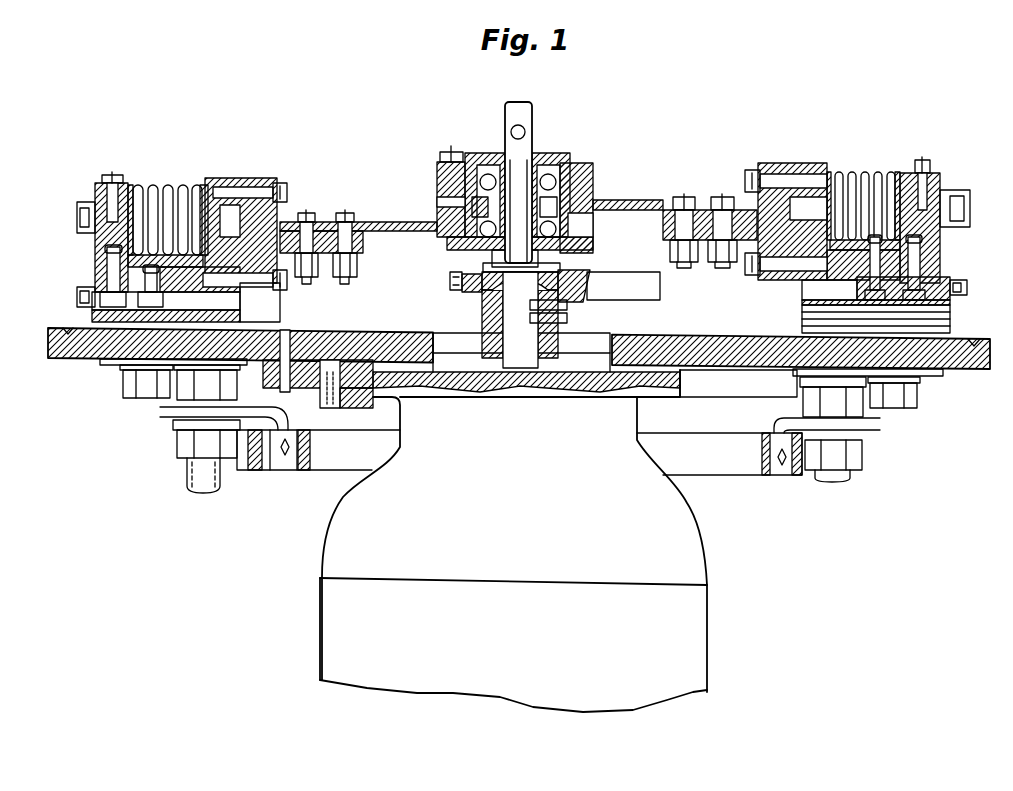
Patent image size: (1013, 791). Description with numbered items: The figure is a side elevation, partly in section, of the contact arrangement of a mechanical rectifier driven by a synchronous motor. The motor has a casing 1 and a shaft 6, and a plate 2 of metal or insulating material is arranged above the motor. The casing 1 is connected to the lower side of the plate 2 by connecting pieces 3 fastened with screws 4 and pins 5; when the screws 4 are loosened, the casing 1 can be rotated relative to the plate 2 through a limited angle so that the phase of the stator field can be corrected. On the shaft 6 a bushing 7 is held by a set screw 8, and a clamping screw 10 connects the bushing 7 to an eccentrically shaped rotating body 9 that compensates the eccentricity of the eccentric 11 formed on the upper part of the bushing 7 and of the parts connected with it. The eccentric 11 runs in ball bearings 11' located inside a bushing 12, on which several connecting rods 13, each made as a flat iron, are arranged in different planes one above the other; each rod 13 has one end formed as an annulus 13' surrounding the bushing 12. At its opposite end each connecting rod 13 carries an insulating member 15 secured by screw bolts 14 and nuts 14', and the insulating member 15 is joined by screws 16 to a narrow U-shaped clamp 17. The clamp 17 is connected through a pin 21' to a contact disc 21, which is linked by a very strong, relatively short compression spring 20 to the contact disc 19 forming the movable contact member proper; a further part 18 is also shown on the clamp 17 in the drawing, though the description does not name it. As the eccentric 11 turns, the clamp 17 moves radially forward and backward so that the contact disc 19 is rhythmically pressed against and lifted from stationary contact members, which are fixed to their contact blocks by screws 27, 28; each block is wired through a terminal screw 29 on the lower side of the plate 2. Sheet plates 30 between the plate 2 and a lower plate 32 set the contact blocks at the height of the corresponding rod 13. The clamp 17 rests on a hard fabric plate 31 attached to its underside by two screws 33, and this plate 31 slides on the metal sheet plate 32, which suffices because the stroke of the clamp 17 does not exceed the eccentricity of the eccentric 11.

The casing 1 is at (697, 529).
The plate 2 is at (950, 365).
The connecting pieces 3 is at (297, 391).
The screws 4 is at (338, 406).
The pins 5 is at (280, 379).
The shaft 6 is at (560, 305).
The bushing 7 is at (482, 309).
The set screw 8 is at (560, 318).
The rotating body 9 is at (655, 289).
The clamping screw 10 is at (451, 282).
The eccentric 11 is at (504, 182).
The ball bearings 11' is at (480, 207).
The bushing 12 is at (541, 163).
The connecting rods 13 is at (471, 204).
The annulus 13' is at (513, 207).
The screw bolts 14 is at (518, 230).
The nuts 14' is at (326, 278).
The insulating member 15 is at (279, 183).
The screws 16 is at (238, 187).
The U-shaped clamp 17 is at (96, 240).
The adjusting screw 18 is at (105, 176).
The contact disc 19 is at (139, 185).
The compression spring 20 is at (172, 185).
The contact disc 21 is at (547, 203).
The pin 21' is at (530, 211).
The screws 27 is at (489, 211).
The screws 28 is at (77, 216).
The terminal screw 29 is at (177, 446).
The sheet plates 30 is at (950, 318).
The hard fabric plate 31 is at (93, 283).
The metal sheet plate 32 is at (97, 315).
The screws 33 is at (107, 275).